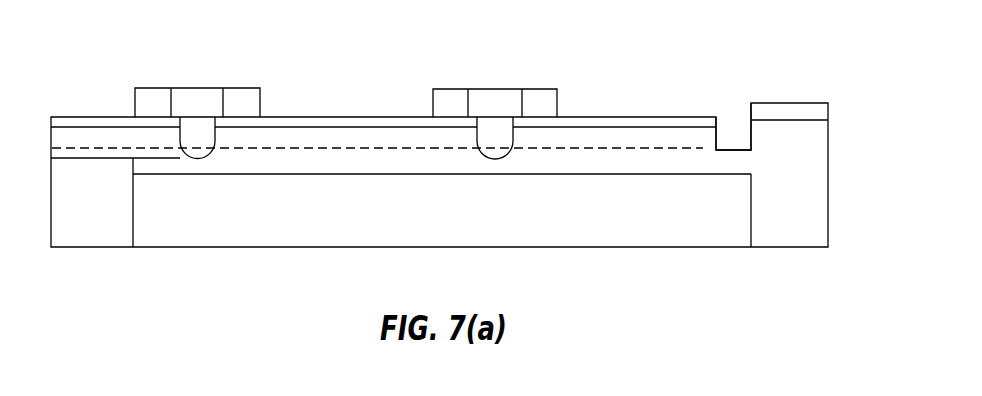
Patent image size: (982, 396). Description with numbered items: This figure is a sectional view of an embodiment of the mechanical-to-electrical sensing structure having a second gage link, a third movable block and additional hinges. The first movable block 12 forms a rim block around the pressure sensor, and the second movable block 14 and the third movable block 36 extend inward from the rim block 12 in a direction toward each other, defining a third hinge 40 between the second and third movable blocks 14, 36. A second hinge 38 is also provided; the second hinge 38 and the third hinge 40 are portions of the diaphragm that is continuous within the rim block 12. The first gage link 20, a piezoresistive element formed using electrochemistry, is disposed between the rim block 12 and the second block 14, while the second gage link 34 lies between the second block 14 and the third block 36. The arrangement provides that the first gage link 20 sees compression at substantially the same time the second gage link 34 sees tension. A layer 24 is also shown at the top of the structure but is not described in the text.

The first movable block 12 is at (108, 217).
The second movable block 14 is at (299, 137).
The first gage link 20 is at (195, 97).
The top insulating layer 24 is at (102, 122).
The second gage link 34 is at (495, 98).
The third movable block 36 is at (600, 140).
The second hinge 38 is at (733, 148).
The third hinge 40 is at (495, 150).